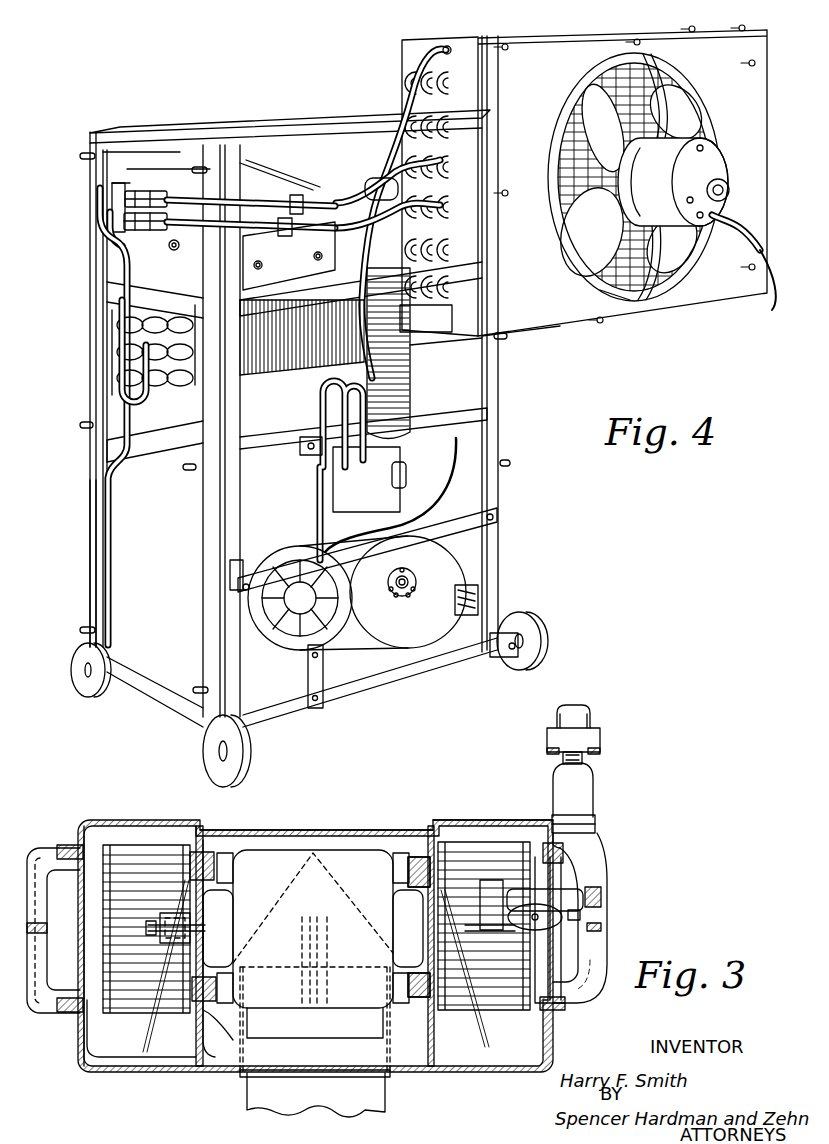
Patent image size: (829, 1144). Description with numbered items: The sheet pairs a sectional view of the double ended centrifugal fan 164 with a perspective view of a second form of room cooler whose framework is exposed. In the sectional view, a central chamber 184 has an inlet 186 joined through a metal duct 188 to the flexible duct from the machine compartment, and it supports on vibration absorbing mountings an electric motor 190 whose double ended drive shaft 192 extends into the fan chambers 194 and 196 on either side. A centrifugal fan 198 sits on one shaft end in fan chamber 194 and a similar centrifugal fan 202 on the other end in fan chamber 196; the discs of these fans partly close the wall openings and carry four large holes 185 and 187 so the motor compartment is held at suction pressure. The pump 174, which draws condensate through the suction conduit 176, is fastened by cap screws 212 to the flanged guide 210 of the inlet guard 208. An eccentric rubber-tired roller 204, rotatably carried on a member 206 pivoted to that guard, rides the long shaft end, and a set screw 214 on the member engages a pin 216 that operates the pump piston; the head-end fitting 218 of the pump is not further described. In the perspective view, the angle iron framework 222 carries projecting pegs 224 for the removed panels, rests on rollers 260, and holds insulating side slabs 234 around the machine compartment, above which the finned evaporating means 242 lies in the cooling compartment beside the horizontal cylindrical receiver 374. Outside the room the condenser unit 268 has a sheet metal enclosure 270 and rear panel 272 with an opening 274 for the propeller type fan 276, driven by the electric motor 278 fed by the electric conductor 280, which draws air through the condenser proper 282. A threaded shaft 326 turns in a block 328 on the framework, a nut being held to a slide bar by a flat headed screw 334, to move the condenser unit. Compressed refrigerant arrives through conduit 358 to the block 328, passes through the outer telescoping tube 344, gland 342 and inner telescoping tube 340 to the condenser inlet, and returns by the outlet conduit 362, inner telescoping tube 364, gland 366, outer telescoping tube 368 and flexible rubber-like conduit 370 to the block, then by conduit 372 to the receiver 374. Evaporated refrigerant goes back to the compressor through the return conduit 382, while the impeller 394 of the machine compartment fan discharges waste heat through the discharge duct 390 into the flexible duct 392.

In FIG. 4, the angle iron framework 222 is at (492, 468).
In FIG. 4, the projecting pegs 224 is at (83, 426).
In FIG. 4, the side slabs 234 is at (125, 540).
In FIG. 4, the finned evaporating means 242 is at (277, 368).
In FIG. 4, the rollers 260 is at (540, 640).
In FIG. 4, the condenser unit 268 is at (633, 80).
In FIG. 4, the sheet metal enclosure 270 is at (412, 52).
In FIG. 4, the rear panel 272 is at (558, 323).
In FIG. 4, the opening 274 is at (626, 294).
In FIG. 4, the propeller type fan 276 is at (677, 253).
In FIG. 4, the electric motor 278 is at (695, 223).
In FIG. 4, the electric conductor 280 is at (773, 268).
In FIG. 4, the condenser proper 282 is at (643, 70).
In FIG. 4, the threaded shaft 326 is at (262, 226).
In FIG. 4, the block 328 is at (100, 175).
In FIG. 4, the flat headed screw 334 is at (398, 108).
In FIG. 4, the inner telescoping tube 340 is at (345, 178).
In FIG. 4, the gland 342 is at (296, 200).
In FIG. 4, the outer telescoping tube 344 is at (182, 197).
In FIG. 4, the conduit 358 is at (105, 350).
In FIG. 4, the outlet conduit 362 is at (430, 313).
In FIG. 4, the inner telescoping tube 364 is at (320, 228).
In FIG. 4, the gland 366 is at (282, 220).
In FIG. 4, the outer telescoping tube 368 is at (188, 228).
In FIG. 4, the flexible rubber-like conduit 370 is at (110, 214).
In FIG. 4, the conduit 372 is at (125, 255).
In FIG. 4, the cylindrical receiver 374 is at (120, 395).
In FIG. 4, the return conduit 382 is at (318, 488).
In FIG. 4, the discharge duct 390 is at (373, 490).
In FIG. 4, the flexible duct 392 is at (410, 394).
In FIG. 4, the impeller 394 is at (300, 607).
In FIG. 3, the double ended centrifugal fan 164 is at (200, 822).
In FIG. 3, the pump 174 is at (575, 795).
In FIG. 3, the suction conduit 176 is at (580, 770).
In FIG. 3, the central chamber 184 is at (222, 1040).
In FIG. 3, the large holes 185 is at (181, 990).
In FIG. 3, the inlet 186 is at (298, 1025).
In FIG. 3, the large holes 187 is at (440, 977).
In FIG. 3, the metal duct 188 is at (386, 1091).
In FIG. 3, the electric motor 190 is at (298, 855).
In FIG. 3, the double ended drive shaft 192 is at (480, 927).
In FIG. 3, the fan chamber 194 is at (117, 1037).
In FIG. 3, the fan chamber 196 is at (527, 1034).
In FIG. 3, the centrifugal fan 198 is at (138, 875).
In FIG. 3, the centrifugal fan 202 is at (480, 830).
In FIG. 3, the eccentric rubber-tired roller 204 is at (492, 888).
In FIG. 3, the member 206 is at (545, 897).
In FIG. 3, the inlet guard 208 is at (592, 880).
In FIG. 3, the flanged guide 210 is at (590, 838).
In FIG. 3, the cap screws 212 is at (580, 812).
In FIG. 3, the set screw 214 is at (580, 920).
In FIG. 3, the pin 216 is at (580, 860).
In FIG. 3, the cap nut 218 is at (592, 720).